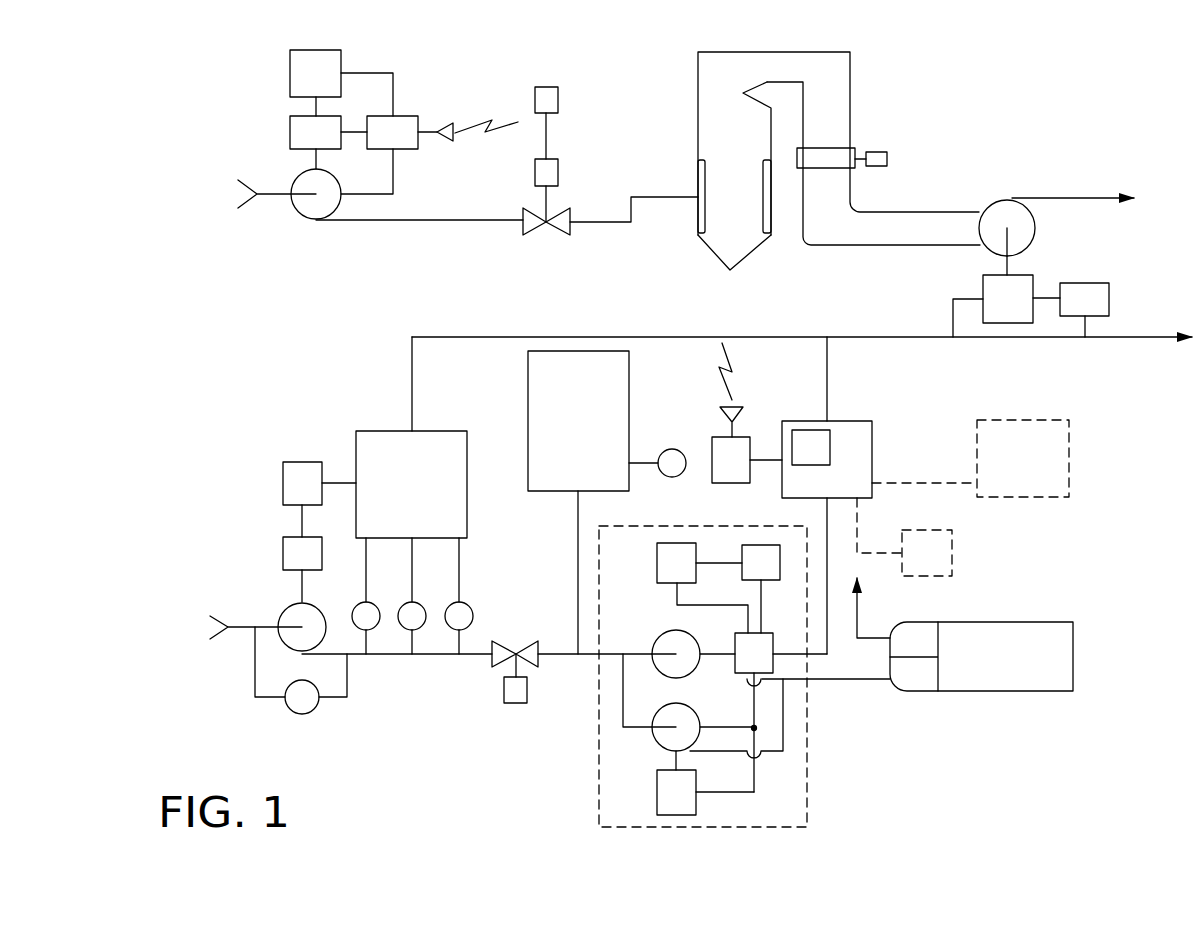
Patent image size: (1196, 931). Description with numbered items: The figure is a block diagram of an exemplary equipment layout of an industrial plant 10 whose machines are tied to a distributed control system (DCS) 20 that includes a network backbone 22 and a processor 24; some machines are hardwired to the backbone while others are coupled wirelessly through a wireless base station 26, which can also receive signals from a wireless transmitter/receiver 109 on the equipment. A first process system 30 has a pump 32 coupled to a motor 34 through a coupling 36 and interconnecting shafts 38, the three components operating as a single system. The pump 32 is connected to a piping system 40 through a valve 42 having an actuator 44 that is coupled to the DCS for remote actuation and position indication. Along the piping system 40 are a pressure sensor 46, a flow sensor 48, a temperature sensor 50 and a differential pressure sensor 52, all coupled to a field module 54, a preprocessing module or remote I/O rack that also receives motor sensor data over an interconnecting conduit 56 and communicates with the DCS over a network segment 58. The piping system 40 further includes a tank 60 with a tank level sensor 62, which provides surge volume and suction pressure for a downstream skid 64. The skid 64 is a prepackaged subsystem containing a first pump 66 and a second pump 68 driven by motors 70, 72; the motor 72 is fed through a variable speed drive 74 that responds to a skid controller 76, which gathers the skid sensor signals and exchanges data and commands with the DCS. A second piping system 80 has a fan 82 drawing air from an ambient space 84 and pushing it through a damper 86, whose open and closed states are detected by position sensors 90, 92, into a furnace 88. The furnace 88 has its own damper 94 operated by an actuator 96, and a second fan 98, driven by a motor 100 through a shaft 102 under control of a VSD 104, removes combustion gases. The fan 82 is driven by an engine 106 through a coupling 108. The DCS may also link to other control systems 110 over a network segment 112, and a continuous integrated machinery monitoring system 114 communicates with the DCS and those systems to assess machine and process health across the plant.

The industrial plant 10 is at (250, 360).
The distributed control system (DCS) 20 is at (860, 452).
The network backbone 22 is at (773, 335).
The processor 24 is at (826, 459).
The wireless base station 26 is at (746, 472).
The first process system 30 is at (260, 521).
The pump 32 is at (288, 620).
The motor 34 is at (317, 495).
The coupling 36 is at (317, 565).
The interconnecting shafts 38 is at (302, 588).
The piping system 40 is at (553, 657).
The valve 42 is at (492, 660).
The actuator 44 is at (512, 705).
The pressure sensor 46 is at (418, 600).
The flow sensor 48 is at (370, 600).
The temperature sensor 50 is at (474, 614).
The differential pressure (DP) sensor 52 is at (297, 715).
The field module 54 is at (397, 488).
The interconnecting conduit 56 is at (339, 483).
The network segment 58 is at (412, 365).
The tank 60 is at (563, 433).
The tank level sensor 62 is at (672, 478).
The skid 64 is at (590, 780).
The first pump 66 is at (665, 738).
The second pump 68 is at (668, 640).
The motor 70 is at (662, 804).
The motor 72 is at (662, 575).
The variable speed drive (VSD) 74 is at (746, 574).
The skid controller 76 is at (739, 665).
The second piping system 80 is at (468, 221).
The fan 82 is at (307, 209).
The ambient space 84 is at (217, 205).
The damper 86 is at (570, 229).
The furnace 88 is at (715, 122).
The position sensor 90 is at (558, 100).
The position sensor 92 is at (558, 172).
The damper 94 is at (830, 155).
The actuator 96 is at (887, 159).
The second fan 98 is at (998, 205).
The motor 100 is at (986, 311).
The shaft 102 is at (1010, 268).
The VSD 104 is at (1063, 311).
The engine 106 is at (294, 85).
The coupling 108 is at (294, 144).
The wireless transmitter/receiver 109 is at (371, 144).
The other control systems 110 is at (1092, 540).
The network segment 112 is at (915, 485).
The continuous integrated machinery monitoring system (CIMMS) 114 is at (906, 565).